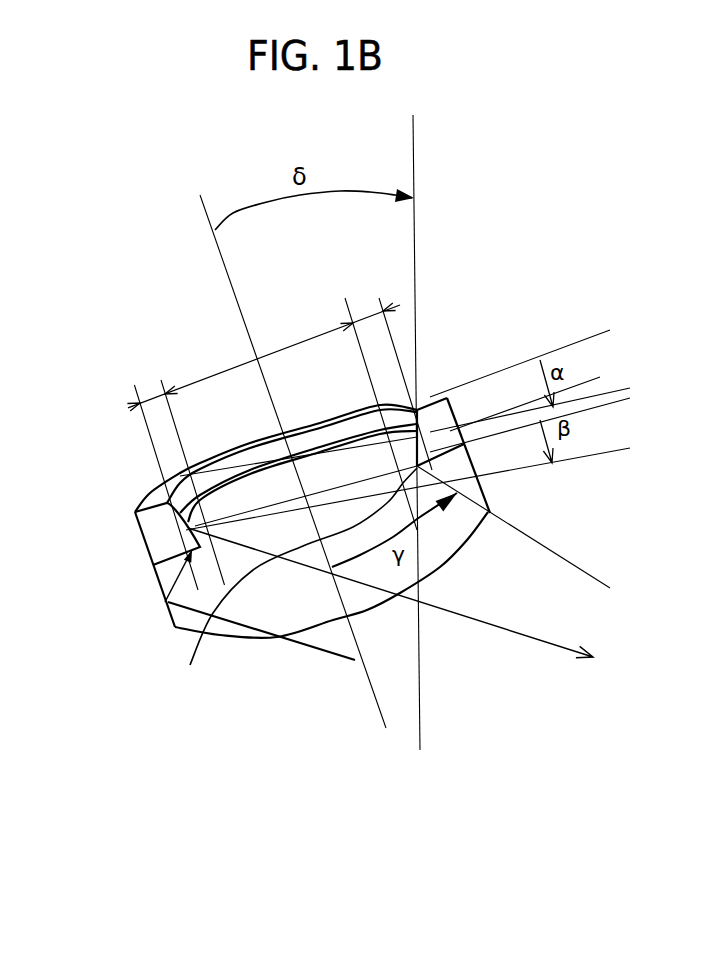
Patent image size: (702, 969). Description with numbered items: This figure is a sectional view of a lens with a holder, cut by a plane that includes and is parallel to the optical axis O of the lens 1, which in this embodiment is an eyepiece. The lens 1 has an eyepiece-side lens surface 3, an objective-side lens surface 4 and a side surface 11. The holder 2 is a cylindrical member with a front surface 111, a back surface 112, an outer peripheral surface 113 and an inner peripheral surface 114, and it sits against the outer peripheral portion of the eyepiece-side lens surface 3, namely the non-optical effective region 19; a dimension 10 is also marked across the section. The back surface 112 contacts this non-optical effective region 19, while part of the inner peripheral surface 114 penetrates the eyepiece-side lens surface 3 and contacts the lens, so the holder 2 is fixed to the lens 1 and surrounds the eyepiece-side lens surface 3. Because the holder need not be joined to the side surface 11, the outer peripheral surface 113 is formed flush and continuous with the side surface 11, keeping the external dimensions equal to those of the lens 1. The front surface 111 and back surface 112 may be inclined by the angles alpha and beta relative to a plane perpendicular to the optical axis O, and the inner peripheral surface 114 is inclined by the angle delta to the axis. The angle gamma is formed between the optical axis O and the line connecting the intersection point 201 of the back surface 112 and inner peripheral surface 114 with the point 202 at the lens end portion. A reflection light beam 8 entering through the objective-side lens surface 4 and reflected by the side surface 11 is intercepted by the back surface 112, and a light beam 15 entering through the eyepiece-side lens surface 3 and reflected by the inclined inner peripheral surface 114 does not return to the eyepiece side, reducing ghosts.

The lens 1 is at (355, 593).
The holder 2 is at (162, 538).
The eyepiece-side lens surface 3 is at (318, 420).
The objective-side lens surface 4 is at (452, 548).
The reflection light beam 8 is at (313, 646).
The width 10 is at (290, 340).
The side surface of the lens 11 is at (162, 588).
The light beam 15 is at (517, 635).
The non-optical effective region 19 is at (365, 315).
The front surface 111 is at (417, 410).
The back surface 112 is at (445, 478).
The outer peripheral surface 113 is at (417, 466).
The inner peripheral surface 114 is at (417, 466).
The intersection point 201 is at (291, 581).
The point 202 is at (488, 513).
The optical axis O is at (215, 243).